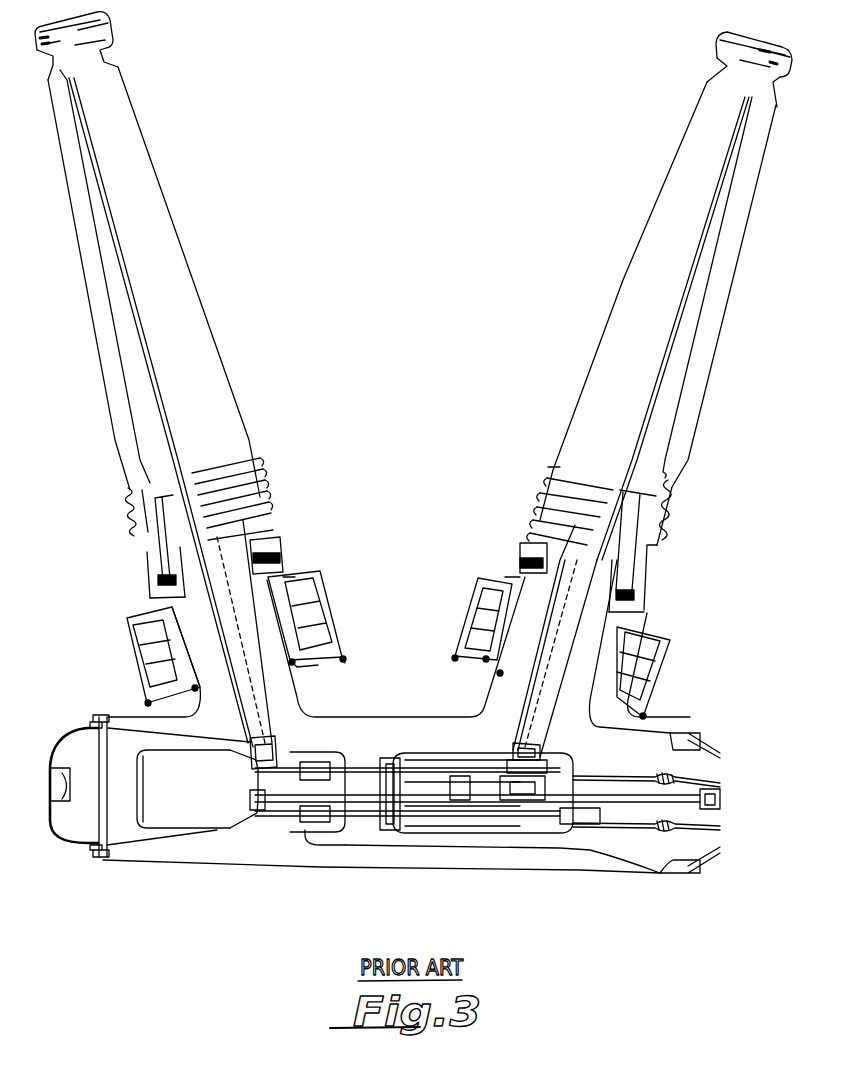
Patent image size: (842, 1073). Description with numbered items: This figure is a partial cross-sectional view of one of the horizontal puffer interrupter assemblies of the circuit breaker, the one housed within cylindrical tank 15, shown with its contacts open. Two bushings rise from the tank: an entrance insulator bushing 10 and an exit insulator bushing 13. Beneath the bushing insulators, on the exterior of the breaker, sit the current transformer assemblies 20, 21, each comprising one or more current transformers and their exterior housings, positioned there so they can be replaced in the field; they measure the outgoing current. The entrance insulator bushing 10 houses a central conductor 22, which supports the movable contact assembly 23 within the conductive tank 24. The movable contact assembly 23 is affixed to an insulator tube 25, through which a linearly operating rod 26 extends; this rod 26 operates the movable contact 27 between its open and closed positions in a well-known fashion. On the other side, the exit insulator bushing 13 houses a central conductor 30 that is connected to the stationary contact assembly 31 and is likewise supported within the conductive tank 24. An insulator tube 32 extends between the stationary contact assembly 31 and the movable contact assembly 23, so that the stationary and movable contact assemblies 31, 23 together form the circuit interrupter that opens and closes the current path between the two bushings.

The entrance insulator bushing 10 is at (597, 390).
The exit insulator bushing 13 is at (222, 402).
The cylindrical tank 15 is at (407, 867).
The current transformer assembly 20 is at (670, 640).
The current transformer assembly 21 is at (325, 597).
The central conductor 22 is at (558, 718).
The movable contact assembly 23 is at (497, 843).
The conductive tank 24 is at (573, 867).
The insulator tube 25 is at (610, 777).
The linearly operating rod 26 is at (643, 810).
The movable contact 27 is at (440, 780).
The central conductor 30 is at (247, 700).
The stationary contact assembly 31 is at (300, 833).
The insulator tube 32 is at (370, 767).